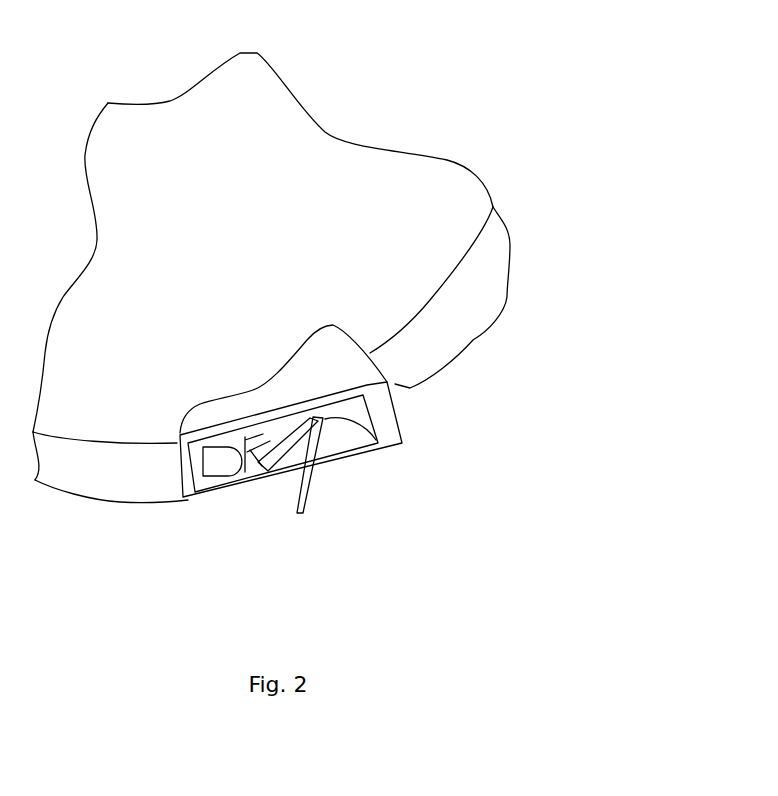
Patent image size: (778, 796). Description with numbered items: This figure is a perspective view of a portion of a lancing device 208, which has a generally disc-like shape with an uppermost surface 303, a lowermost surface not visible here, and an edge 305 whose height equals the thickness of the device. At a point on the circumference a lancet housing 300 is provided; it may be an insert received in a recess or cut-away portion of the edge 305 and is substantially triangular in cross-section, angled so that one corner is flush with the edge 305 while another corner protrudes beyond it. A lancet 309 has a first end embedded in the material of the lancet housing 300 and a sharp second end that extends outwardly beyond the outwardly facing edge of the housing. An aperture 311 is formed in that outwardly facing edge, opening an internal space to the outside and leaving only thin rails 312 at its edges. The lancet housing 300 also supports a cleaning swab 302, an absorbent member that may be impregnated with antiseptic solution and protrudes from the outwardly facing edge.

The lancing device 208 is at (562, 97).
The lancet housing 300 is at (340, 368).
The cleaning swab 302 is at (223, 461).
The uppermost surface 303 is at (268, 158).
The edge 305 is at (473, 303).
The lancet 309 is at (298, 512).
The aperture 311 is at (338, 438).
The thin rails 312 is at (388, 425).